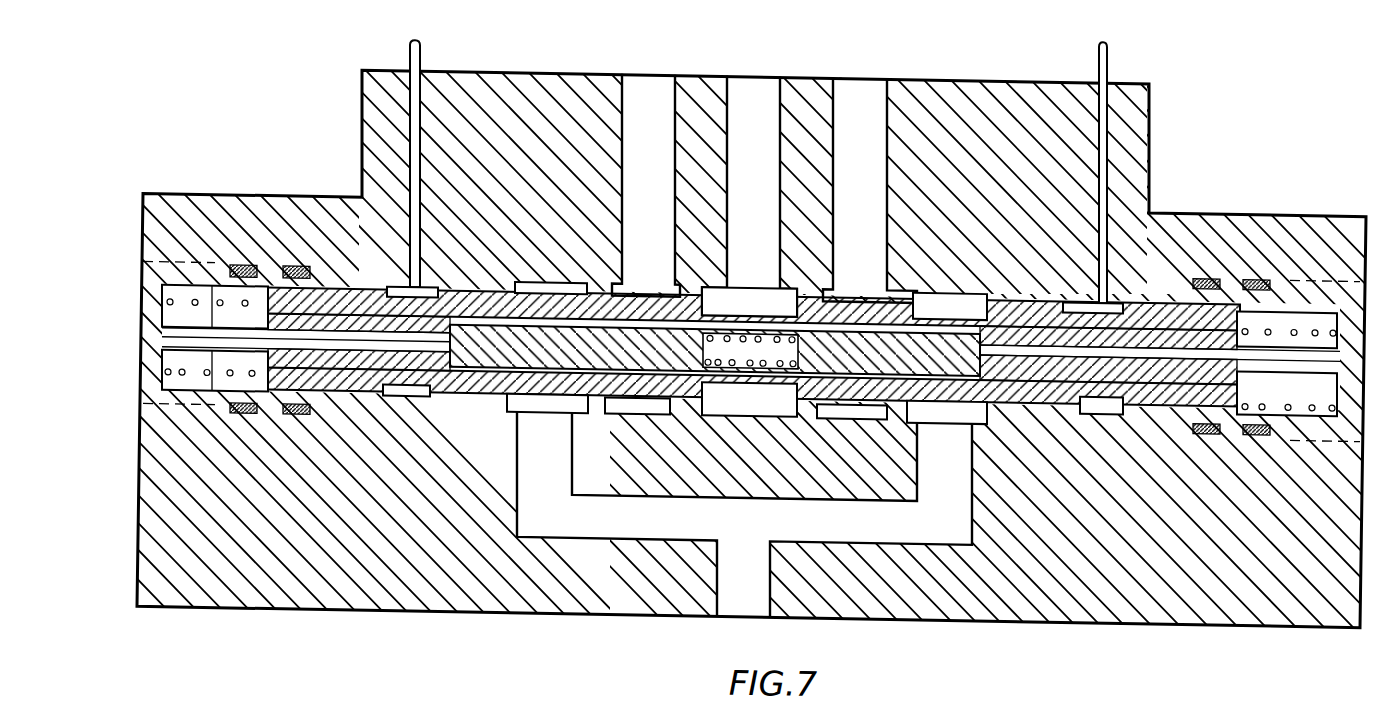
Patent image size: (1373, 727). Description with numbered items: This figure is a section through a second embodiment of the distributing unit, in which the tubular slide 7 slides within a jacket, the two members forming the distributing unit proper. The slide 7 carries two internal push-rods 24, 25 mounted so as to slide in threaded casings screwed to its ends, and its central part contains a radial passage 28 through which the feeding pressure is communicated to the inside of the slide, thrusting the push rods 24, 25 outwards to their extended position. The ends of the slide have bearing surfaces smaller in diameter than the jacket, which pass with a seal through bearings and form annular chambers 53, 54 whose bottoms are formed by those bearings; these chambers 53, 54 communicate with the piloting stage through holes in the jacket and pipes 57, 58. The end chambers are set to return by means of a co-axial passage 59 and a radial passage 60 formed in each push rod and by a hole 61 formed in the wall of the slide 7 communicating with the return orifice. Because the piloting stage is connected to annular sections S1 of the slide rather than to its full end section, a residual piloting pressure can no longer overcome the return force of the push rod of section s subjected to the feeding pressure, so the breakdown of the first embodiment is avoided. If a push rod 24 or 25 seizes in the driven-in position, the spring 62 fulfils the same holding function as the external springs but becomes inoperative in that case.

The slide 7 is at (627, 389).
The push-rod 24 is at (476, 352).
The push-rod 25 is at (1031, 375).
The radial passage 28 is at (752, 322).
The annular chamber 53 is at (374, 267).
The annular chamber 54 is at (1107, 294).
The pipe 57 is at (414, 121).
The pipe 58 is at (1100, 124).
The co-axial passage 59 is at (242, 309).
The radial passage 60 is at (197, 310).
The hole 61 is at (538, 292).
The spring 62 is at (764, 368).
The annular section S1 is at (397, 402).
The section s is at (564, 374).